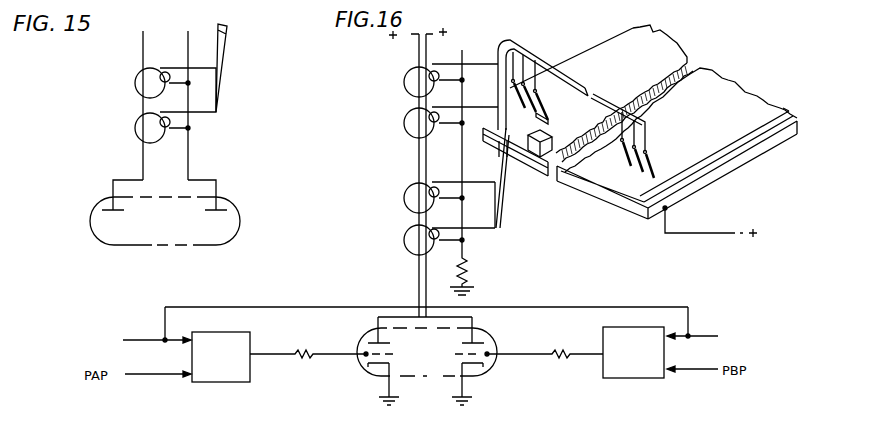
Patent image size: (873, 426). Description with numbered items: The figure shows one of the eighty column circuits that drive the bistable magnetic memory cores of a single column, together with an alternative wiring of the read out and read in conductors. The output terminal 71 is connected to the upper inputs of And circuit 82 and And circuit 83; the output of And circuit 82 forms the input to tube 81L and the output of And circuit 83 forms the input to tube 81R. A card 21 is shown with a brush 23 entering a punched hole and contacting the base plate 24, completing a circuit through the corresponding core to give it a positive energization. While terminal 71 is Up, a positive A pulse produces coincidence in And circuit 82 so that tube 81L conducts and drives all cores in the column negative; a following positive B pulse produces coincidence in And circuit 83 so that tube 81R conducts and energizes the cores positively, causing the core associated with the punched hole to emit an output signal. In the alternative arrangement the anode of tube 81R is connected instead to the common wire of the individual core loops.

In FIG. 15, the tube 81L is at (100, 198).
In FIG. 16, the tube 81L is at (366, 333).
In FIG. 15, the tube 81R is at (228, 197).
In FIG. 16, the tube 81R is at (483, 328).
In FIG. 16, the card 21 is at (714, 148).
In FIG. 16, the brush 23 is at (535, 92).
In FIG. 16, the base plate 24 is at (688, 195).
In FIG. 16, the output terminal 71 is at (139, 336).
In FIG. 16, the And circuit 82 is at (237, 332).
In FIG. 16, the And circuit 83 is at (645, 327).